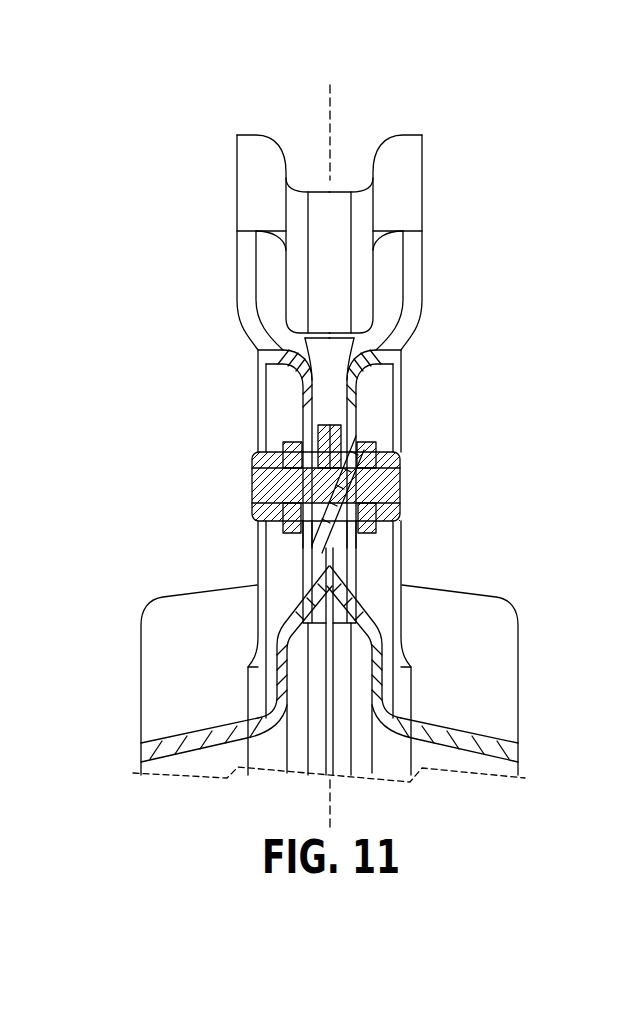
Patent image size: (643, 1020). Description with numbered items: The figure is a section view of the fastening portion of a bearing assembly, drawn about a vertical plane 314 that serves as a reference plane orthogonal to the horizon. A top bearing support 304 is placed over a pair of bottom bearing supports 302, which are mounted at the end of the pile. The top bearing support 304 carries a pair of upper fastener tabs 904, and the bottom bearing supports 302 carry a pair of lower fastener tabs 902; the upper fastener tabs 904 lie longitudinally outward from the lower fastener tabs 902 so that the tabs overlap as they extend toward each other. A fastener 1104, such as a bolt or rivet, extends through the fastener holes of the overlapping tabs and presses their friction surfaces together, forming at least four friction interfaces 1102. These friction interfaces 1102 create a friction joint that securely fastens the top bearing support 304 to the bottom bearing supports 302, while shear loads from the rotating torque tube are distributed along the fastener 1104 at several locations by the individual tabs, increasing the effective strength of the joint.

The vertical plane 314 is at (334, 112).
The top bearing support 304 is at (422, 264).
The bottom bearing support 302 is at (139, 678).
The upper fastener tab 904 is at (313, 405).
The friction interface 1102 is at (300, 458).
The fastener 1104 is at (258, 512).
The lower fastener tab 902 is at (323, 561).